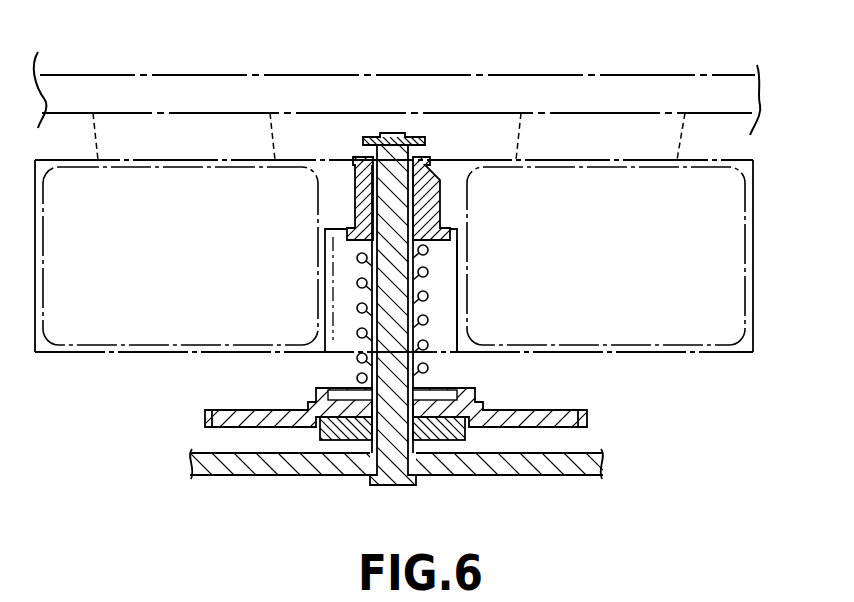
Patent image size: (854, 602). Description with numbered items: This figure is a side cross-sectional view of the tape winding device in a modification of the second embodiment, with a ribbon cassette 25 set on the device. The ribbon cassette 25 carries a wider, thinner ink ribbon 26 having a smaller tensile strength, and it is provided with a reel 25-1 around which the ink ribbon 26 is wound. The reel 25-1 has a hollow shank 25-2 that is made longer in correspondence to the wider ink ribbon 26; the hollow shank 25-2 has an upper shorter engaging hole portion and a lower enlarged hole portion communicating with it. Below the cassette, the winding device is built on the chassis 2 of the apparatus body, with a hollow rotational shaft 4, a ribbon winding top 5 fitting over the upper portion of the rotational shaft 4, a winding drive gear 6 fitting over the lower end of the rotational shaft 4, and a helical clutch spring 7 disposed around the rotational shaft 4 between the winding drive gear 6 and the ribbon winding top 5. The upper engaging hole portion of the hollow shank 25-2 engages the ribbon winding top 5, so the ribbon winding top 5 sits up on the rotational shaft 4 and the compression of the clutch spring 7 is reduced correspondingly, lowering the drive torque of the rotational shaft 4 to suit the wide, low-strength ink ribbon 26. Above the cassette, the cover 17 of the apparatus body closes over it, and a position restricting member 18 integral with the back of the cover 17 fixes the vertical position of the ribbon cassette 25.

The chassis 2 is at (252, 463).
The rotational shaft 4 is at (372, 355).
The ribbon winding top 5 is at (355, 262).
The winding drive gear 6 is at (558, 412).
The clutch spring 7 is at (425, 356).
The cover 17 is at (585, 92).
The position restricting member 18 is at (667, 135).
The ribbon cassette 25 is at (753, 189).
The reel 25-1 is at (448, 165).
The hollow shank 25-2 is at (466, 260).
The ink ribbon 26 is at (727, 254).